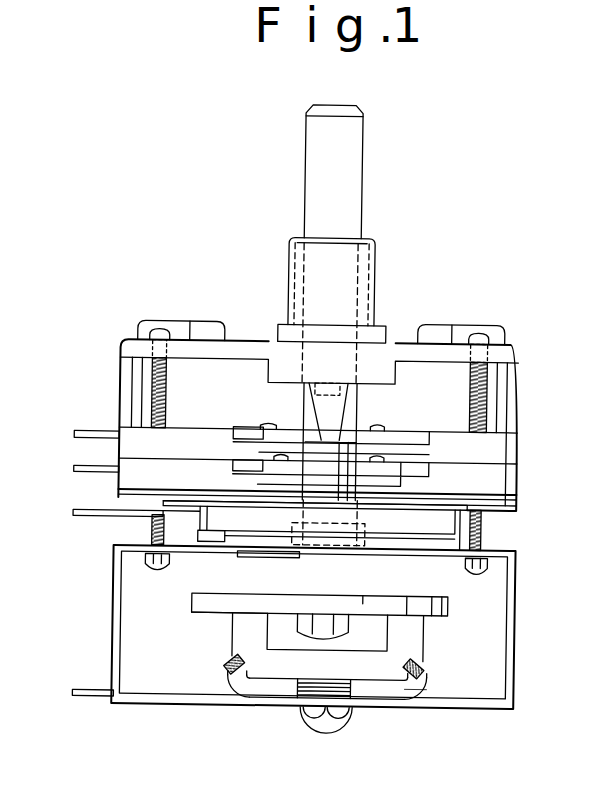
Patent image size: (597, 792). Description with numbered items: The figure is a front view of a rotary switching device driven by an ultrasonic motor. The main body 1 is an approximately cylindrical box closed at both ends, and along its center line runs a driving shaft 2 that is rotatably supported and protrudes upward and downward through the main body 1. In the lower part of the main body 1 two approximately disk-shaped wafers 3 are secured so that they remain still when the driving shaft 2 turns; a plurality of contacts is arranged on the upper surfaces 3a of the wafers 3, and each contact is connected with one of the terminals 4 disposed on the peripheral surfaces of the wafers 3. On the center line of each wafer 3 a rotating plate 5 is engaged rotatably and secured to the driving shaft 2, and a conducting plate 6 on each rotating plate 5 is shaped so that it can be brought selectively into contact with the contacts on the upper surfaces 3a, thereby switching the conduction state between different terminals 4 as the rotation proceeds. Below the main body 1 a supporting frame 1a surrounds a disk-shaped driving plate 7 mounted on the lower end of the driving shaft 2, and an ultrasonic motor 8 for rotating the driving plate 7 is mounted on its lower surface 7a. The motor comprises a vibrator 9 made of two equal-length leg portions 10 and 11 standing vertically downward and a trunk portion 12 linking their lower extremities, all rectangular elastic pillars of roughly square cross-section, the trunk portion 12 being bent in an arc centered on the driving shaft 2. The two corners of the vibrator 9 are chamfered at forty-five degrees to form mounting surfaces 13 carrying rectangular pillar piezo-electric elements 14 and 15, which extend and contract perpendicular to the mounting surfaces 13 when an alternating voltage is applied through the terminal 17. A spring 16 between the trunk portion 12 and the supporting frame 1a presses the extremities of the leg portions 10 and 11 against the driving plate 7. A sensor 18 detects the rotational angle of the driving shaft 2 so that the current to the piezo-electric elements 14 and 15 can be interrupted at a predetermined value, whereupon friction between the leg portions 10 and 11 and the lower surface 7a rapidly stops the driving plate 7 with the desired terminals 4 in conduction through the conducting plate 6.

The main body of the device 1 is at (502, 352).
The supporting frame 1a is at (506, 706).
The driving shaft 2 is at (345, 190).
The wafers 3 is at (497, 450).
The upper surfaces of the wafers 3a is at (183, 460).
The terminals 4 is at (83, 434).
The rotating plate 5 is at (383, 470).
The conducting plate 6 is at (234, 460).
The driving plate 7 is at (453, 608).
The lower surface of the driving plate 7a is at (201, 618).
The ultrasonic motor 8 is at (451, 684).
The vibrator 9 is at (391, 684).
The leg portion 10 is at (242, 629).
The leg portion 11 is at (402, 643).
The trunk portion 12 is at (292, 662).
The mounting surfaces 13 is at (432, 672).
The piezo-electric element 14 is at (216, 665).
The piezo-electric element 15 is at (416, 688).
The spring 16 is at (364, 692).
The terminal 17 is at (83, 699).
The sensor 18 is at (482, 527).